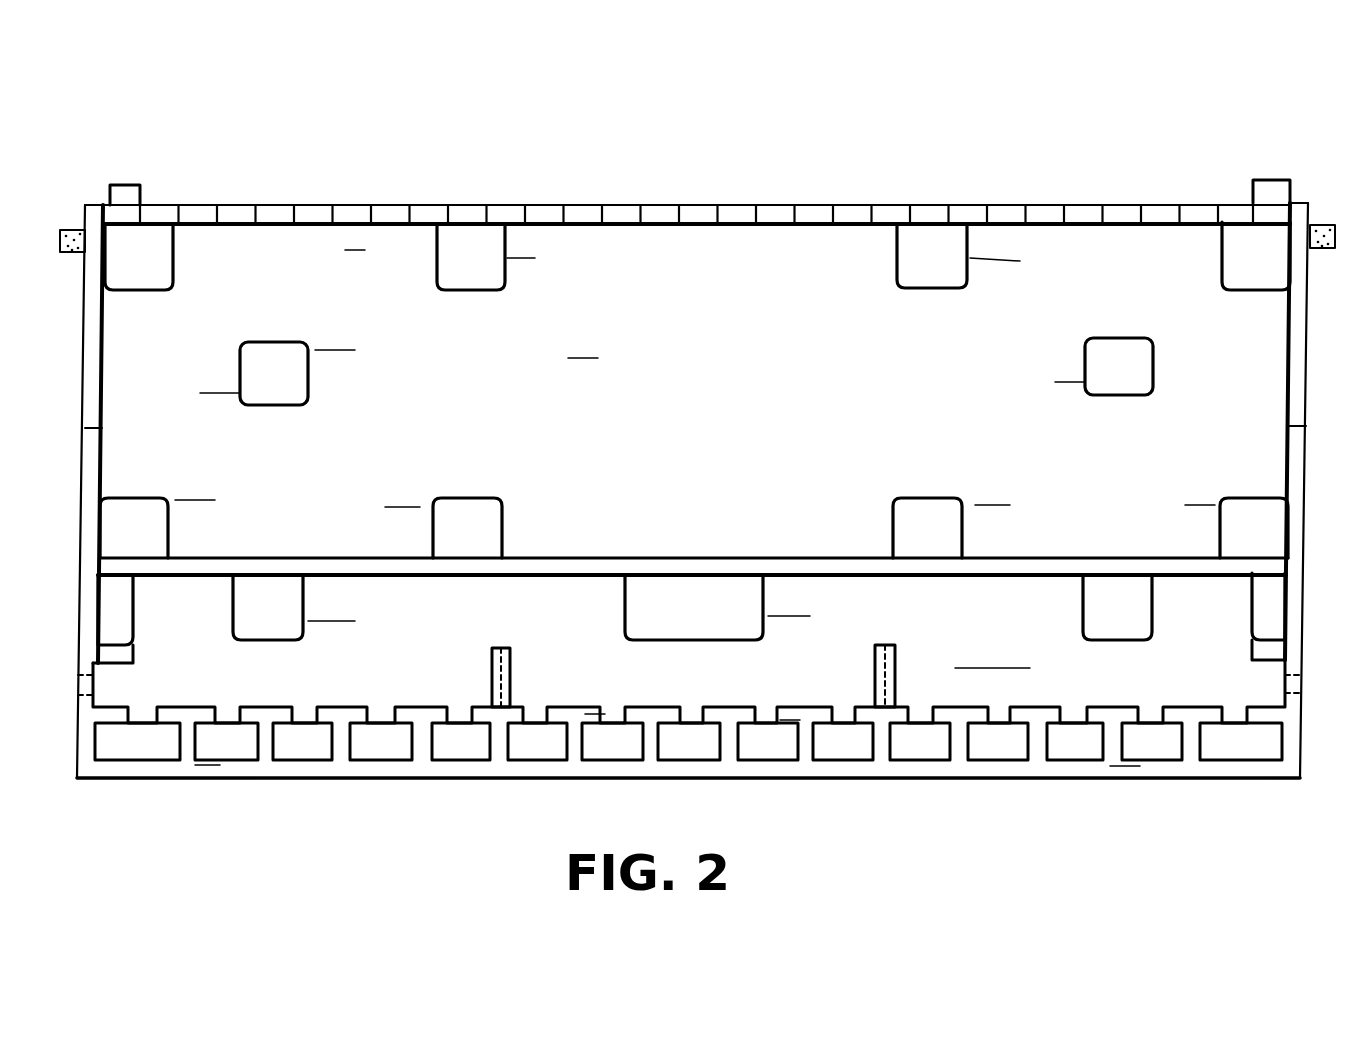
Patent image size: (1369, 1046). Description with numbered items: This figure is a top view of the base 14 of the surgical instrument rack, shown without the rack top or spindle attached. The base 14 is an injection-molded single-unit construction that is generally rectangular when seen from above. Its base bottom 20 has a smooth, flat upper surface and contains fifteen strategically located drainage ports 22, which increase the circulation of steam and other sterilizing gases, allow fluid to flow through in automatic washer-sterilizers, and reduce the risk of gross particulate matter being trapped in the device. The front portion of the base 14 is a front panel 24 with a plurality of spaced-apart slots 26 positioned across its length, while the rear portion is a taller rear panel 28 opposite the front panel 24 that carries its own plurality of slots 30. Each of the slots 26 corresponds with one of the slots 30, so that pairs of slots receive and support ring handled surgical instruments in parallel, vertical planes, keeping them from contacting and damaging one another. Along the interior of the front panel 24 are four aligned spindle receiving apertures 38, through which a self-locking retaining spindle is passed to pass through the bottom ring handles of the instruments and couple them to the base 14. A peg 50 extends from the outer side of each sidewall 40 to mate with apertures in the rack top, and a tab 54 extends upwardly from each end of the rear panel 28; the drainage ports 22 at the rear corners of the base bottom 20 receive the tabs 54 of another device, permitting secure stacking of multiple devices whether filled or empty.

The base 14 is at (1147, 104).
The base bottom 20 is at (770, 408).
The drainage ports 22 is at (149, 268).
The front panel 24 is at (342, 718).
The slots 26 is at (305, 712).
The rear panel 28 is at (658, 240).
The slots 30 is at (150, 210).
The spindle receiving apertures 38 is at (93, 684).
The sidewalls 40 is at (92, 453).
The peg 50 is at (77, 250).
The tab 54 is at (128, 186).